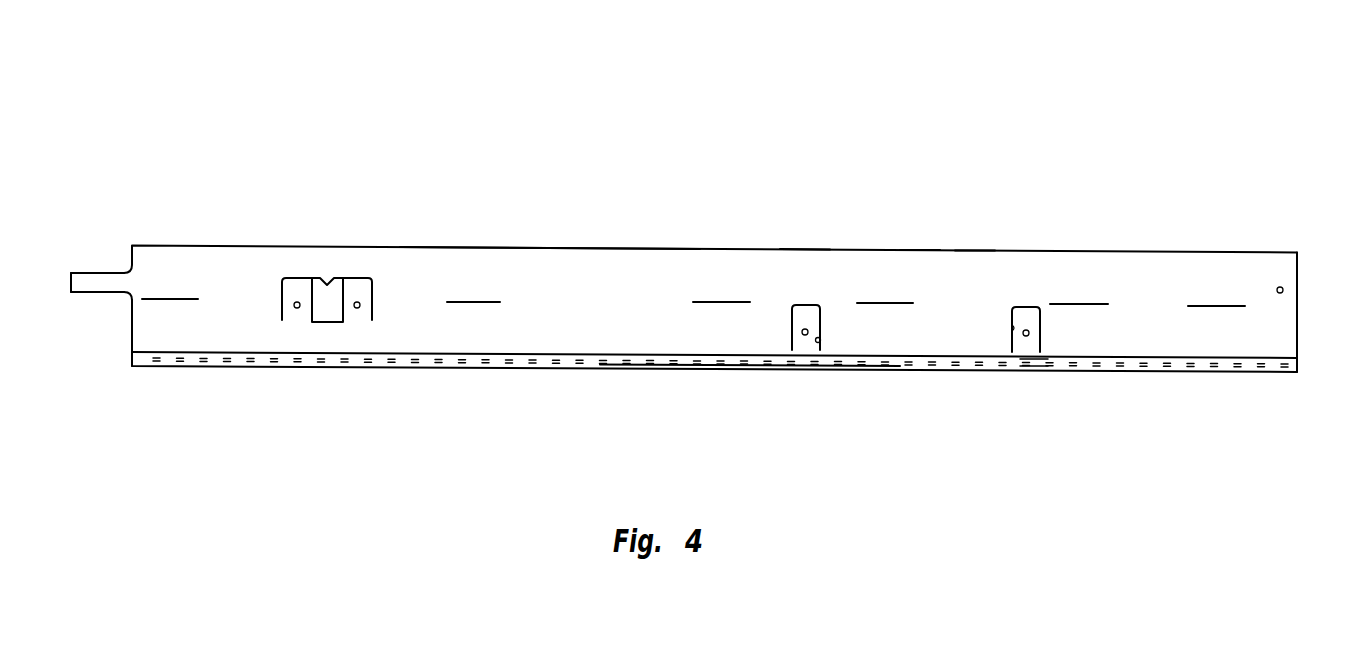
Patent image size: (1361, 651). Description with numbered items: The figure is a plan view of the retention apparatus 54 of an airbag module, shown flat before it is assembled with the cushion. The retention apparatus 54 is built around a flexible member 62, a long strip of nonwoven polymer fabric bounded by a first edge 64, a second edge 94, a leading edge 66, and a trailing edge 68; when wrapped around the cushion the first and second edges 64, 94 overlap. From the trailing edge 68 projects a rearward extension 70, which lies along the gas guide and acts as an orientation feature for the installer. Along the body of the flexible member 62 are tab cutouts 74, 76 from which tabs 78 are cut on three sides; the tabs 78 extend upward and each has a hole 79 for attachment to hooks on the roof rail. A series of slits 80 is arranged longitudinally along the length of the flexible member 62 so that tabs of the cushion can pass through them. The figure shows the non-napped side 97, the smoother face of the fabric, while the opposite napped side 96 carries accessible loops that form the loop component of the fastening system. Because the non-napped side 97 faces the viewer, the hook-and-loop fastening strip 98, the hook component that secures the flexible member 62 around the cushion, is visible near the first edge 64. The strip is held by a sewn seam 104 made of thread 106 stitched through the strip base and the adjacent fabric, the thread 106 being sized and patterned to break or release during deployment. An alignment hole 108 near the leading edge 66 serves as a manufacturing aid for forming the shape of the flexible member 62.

The retention apparatus 54 is at (758, 96).
The flexible member 62 is at (807, 243).
The first edge 64 is at (372, 368).
The leading edge 66 is at (1298, 358).
The trailing edge 68 is at (130, 330).
The rearward extension 70 is at (90, 270).
The tab cutout 74 is at (336, 278).
The tab cutout 76 is at (821, 338).
The tab 78 is at (297, 268).
The hole 79 is at (294, 305).
The slit 80 is at (153, 299).
The second edge 94 is at (567, 248).
The napped side 96 is at (918, 250).
The non-napped side 97 is at (970, 255).
The hook-and-loop fastening strip 98 is at (958, 382).
The sewn seam 104 is at (771, 374).
The thread 106 is at (1022, 368).
The alignment hole 108 is at (1281, 287).